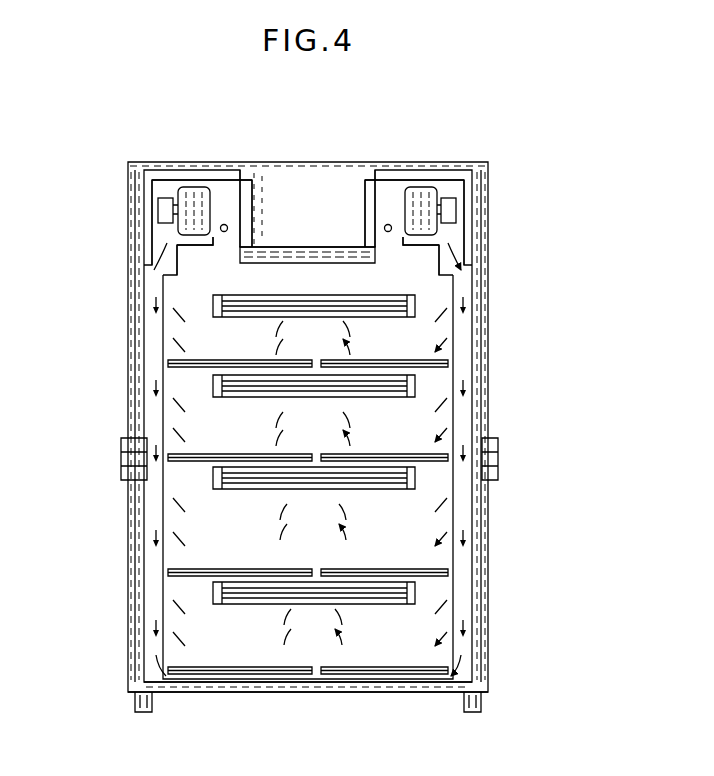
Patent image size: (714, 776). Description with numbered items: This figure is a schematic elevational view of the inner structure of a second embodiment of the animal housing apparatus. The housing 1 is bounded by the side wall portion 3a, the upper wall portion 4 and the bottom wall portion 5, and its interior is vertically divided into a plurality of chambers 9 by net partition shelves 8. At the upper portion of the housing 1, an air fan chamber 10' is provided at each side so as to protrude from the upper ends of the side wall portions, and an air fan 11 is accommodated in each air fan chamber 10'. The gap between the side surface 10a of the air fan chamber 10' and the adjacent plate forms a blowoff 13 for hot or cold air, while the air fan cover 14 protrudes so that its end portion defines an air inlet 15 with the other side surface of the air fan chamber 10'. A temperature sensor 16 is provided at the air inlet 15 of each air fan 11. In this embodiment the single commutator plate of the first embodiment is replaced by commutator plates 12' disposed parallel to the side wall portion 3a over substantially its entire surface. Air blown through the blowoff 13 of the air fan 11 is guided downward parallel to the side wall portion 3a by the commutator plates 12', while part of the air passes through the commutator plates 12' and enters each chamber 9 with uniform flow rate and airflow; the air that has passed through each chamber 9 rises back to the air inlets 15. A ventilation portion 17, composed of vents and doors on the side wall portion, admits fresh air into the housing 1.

The housing 1 is at (497, 281).
The side wall portion 3a is at (135, 505).
The upper wall portion 4 is at (312, 247).
The bottom wall portion 5 is at (318, 692).
The net partition shelf 8 is at (449, 455).
The chamber 9 is at (310, 478).
The air fan chamber 10' is at (301, 151).
The side surface of the air fan chamber 10a is at (158, 212).
The air fan 11 is at (196, 187).
The commutator plate 12' is at (309, 458).
The blowoff 13 is at (176, 246).
The air fan cover 14 is at (193, 250).
The air inlet 15 is at (236, 187).
The temperature sensor 16 is at (224, 232).
The ventilation portion 17 is at (121, 460).